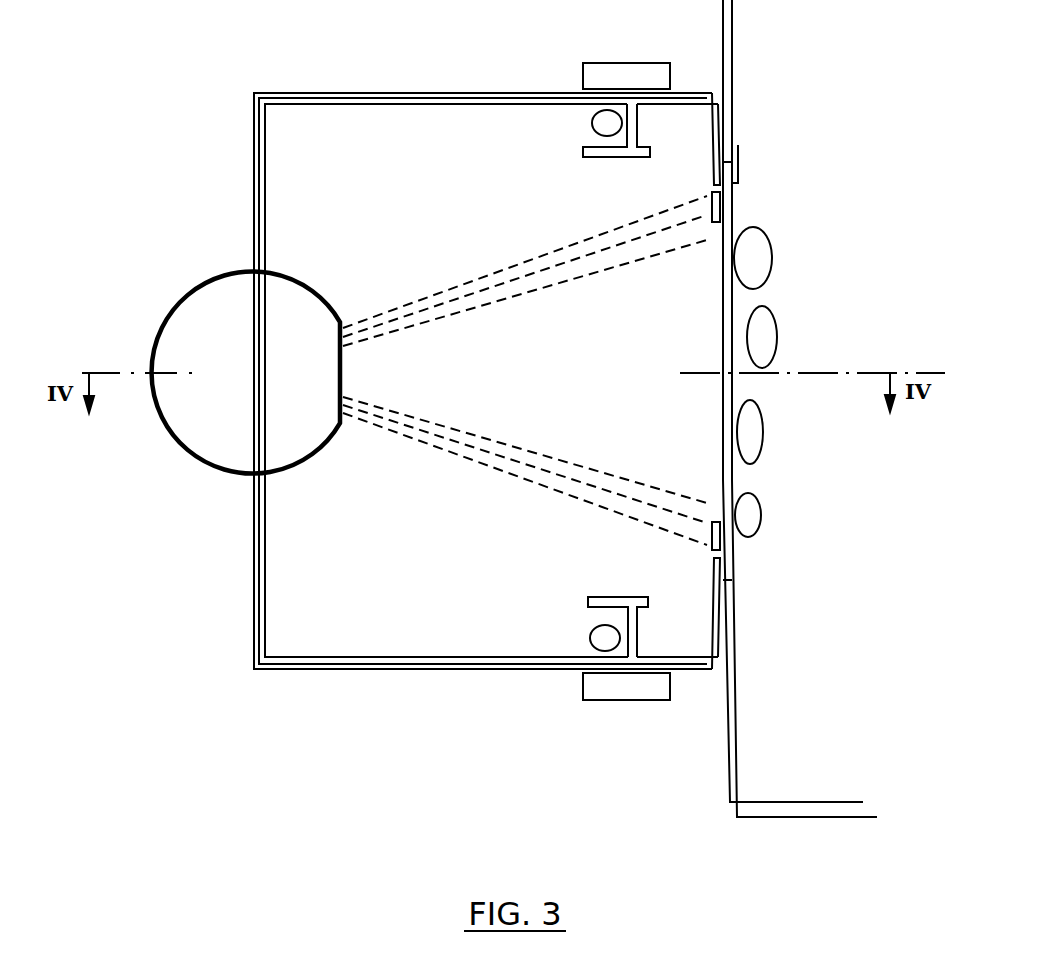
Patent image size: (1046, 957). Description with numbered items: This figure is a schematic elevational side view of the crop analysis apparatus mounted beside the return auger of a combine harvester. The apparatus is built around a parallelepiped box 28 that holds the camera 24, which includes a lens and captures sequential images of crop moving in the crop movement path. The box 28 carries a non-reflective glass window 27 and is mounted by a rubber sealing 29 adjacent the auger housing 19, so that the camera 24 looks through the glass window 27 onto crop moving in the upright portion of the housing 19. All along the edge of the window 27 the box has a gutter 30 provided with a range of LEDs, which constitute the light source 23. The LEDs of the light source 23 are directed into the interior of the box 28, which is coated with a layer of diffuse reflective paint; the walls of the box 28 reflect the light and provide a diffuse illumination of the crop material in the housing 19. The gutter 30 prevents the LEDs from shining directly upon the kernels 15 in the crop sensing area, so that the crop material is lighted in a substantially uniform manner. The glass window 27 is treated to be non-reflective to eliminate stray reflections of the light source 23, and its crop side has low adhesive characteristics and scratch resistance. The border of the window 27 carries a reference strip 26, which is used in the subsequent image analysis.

The kernels 15 is at (767, 268).
The housing 19 is at (726, 77).
The light source 23 is at (594, 113).
The camera 24 is at (168, 447).
The reference strip 26 is at (718, 206).
The glass window 27 is at (727, 388).
The box 28 is at (310, 93).
The rubber sealing 29 is at (716, 93).
The gutter 30 is at (583, 152).